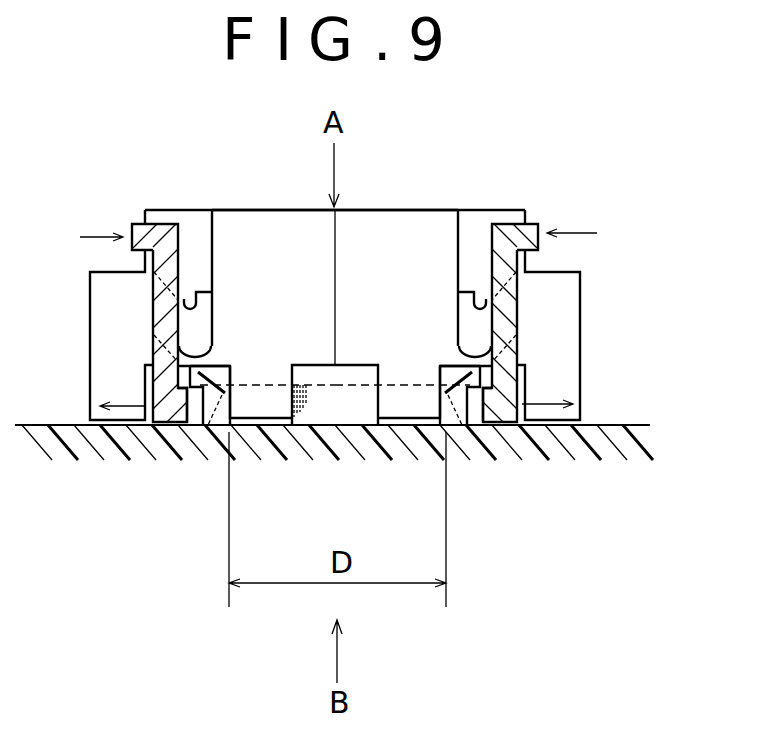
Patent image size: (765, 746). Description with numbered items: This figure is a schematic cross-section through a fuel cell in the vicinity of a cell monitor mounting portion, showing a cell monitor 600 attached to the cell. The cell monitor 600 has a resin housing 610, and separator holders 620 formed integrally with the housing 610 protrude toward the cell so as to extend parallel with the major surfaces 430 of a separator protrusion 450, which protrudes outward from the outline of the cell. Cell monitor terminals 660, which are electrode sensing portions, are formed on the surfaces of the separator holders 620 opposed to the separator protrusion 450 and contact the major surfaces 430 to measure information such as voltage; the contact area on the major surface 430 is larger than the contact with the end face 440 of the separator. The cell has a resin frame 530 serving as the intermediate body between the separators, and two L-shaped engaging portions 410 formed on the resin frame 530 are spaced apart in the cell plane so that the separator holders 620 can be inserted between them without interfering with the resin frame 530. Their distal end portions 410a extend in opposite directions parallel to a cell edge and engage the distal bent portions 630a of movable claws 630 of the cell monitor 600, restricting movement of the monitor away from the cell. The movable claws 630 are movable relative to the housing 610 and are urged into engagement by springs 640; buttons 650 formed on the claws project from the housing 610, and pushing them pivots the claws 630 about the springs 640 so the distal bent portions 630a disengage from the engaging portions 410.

The cell monitor 600 is at (172, 211).
The resin housing 610 is at (275, 208).
The cell monitor terminals 660 is at (392, 208).
The buttons 650 is at (142, 230).
The movable claws 630 is at (158, 302).
The springs 640 is at (202, 323).
The distal bent portions 630a is at (180, 395).
The engaging portions 410 is at (222, 395).
The distal end portions 410a is at (255, 352).
The separator holders 620 is at (268, 402).
The major surfaces 430 is at (315, 398).
The end face 440 is at (328, 383).
The separator protrusion 450 is at (347, 393).
The resin frame 530 is at (615, 435).